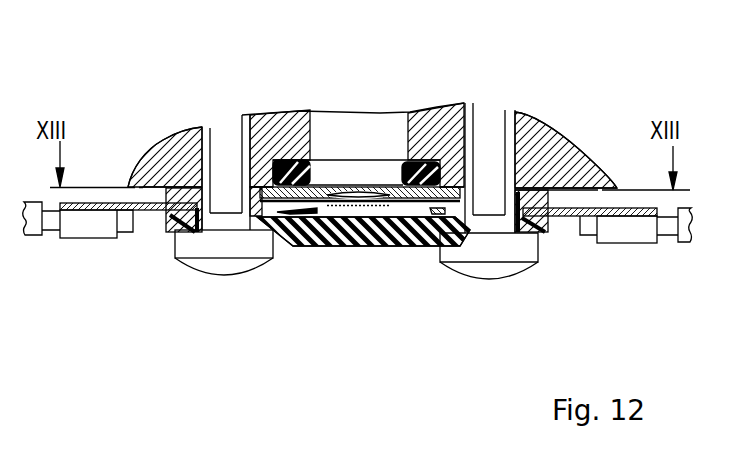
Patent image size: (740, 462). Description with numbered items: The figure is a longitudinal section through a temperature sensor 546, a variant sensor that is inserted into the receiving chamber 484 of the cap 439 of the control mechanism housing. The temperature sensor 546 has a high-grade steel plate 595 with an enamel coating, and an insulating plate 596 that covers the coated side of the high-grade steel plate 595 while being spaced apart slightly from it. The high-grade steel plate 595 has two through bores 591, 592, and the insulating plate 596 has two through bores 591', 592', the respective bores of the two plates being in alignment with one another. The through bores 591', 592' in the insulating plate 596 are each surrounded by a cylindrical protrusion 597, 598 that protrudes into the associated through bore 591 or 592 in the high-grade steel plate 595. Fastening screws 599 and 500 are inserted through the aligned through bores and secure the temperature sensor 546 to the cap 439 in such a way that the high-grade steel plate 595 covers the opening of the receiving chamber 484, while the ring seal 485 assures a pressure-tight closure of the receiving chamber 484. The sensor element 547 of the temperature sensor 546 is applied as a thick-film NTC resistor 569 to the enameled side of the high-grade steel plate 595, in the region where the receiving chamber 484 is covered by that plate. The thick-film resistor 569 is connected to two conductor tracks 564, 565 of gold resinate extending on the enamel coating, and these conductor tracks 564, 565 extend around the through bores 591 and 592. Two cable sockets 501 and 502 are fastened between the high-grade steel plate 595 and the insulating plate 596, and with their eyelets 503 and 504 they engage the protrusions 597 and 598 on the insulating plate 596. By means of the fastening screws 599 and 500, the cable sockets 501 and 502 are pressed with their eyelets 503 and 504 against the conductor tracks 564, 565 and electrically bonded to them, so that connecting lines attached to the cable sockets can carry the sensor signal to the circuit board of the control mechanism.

The cap 439 is at (525, 127).
The receiving chamber 484 is at (348, 130).
The ring seal 485 is at (417, 160).
The fastening screw 500 is at (187, 259).
The cable socket 501 is at (633, 238).
The cable socket 502 is at (88, 229).
The eyelet 503 is at (432, 236).
The eyelet 504 is at (137, 212).
The temperature sensor 546 is at (313, 258).
The sensor element 547 is at (250, 233).
The conductor track 564 is at (383, 187).
The conductor track 565 is at (254, 184).
The thick-film NTC resistor 569 is at (355, 207).
The through bore 591 is at (215, 132).
The through bore 591' is at (200, 261).
The through bore 592 is at (493, 133).
The through bore 592' is at (484, 266).
The high-grade steel plate 595 is at (137, 187).
The insulating plate 596 is at (302, 238).
The cylindrical protrusion 597 is at (530, 190).
The cylindrical protrusion 598 is at (200, 187).
The fastening screw 599 is at (487, 267).